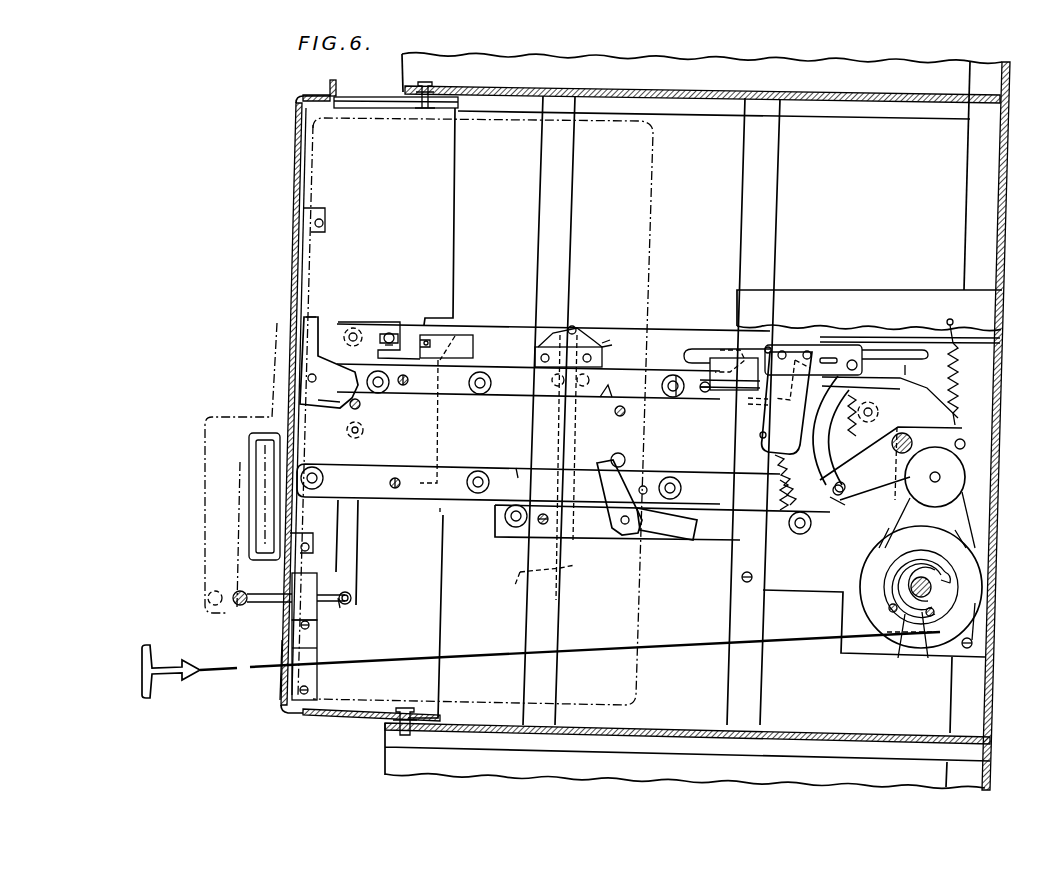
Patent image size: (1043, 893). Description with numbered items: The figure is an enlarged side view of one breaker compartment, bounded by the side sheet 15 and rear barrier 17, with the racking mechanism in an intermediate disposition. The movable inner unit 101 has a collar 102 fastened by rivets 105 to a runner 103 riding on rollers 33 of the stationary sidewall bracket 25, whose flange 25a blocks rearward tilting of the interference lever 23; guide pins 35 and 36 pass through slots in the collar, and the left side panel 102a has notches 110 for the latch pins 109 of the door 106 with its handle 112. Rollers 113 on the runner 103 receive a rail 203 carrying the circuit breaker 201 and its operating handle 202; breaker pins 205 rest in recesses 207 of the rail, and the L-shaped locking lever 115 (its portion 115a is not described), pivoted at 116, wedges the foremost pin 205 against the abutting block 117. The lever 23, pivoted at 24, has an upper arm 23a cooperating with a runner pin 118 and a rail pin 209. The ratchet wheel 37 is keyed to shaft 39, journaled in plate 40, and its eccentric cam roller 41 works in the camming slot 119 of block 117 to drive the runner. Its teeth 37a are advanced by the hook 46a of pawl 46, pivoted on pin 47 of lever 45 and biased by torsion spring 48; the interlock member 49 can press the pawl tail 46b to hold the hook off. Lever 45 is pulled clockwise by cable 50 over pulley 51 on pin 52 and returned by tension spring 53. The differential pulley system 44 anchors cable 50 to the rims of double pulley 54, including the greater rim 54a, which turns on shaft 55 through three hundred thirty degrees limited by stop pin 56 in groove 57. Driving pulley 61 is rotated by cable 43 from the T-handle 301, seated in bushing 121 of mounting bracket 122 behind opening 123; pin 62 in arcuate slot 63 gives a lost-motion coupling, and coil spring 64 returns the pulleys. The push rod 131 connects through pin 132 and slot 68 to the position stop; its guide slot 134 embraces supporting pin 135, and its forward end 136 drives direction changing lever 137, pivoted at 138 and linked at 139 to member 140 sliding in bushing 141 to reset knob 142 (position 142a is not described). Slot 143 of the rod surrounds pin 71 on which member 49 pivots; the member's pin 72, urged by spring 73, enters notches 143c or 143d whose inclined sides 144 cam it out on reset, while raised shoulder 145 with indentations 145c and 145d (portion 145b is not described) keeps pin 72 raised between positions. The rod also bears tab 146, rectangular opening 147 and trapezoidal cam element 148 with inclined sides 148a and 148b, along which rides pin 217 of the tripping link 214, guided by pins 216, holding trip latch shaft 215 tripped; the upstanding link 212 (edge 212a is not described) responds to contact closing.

The side sheet 15 is at (690, 68).
The rear barrier 17 is at (1005, 197).
The interference lever 23 is at (695, 525).
The upper arm 23a is at (608, 497).
The pivot 24 is at (620, 521).
The sidewall bracket 25 is at (730, 560).
The stationary flange 25a is at (598, 540).
The rollers 33 is at (505, 518).
The guide pin 35 is at (424, 110).
The guide pin 36 is at (405, 708).
The ratchet wheel 37 is at (963, 438).
The peripheral teeth 37a is at (933, 397).
The shaft 39 is at (912, 443).
The stationary plate 40 is at (900, 296).
The camming element 41 is at (890, 418).
The flexible cable 43 is at (655, 648).
The differential pulley system 44 is at (954, 526).
The lever 45 is at (905, 470).
The ratchet operating pawl 46 is at (812, 432).
The hook 46a is at (866, 505).
The tail 46b is at (846, 366).
The pin 47 is at (833, 492).
The torsion spring 48 is at (820, 472).
The interlock member 49 is at (765, 428).
The cable 50 is at (965, 488).
The pulley 51 is at (964, 475).
The pin 52 is at (937, 482).
The tension spring 53 is at (958, 368).
The double pulley 54 is at (960, 566).
The greater rim 54a is at (977, 603).
The shaft 55 is at (918, 576).
The stop pin 56 is at (936, 612).
The concentric groove 57 is at (955, 578).
The driving pulley 61 is at (870, 561).
The pin 62 is at (890, 611).
The arcuate slot 63 is at (880, 586).
The coil spring 64 is at (912, 622).
The horizontal slot 68 is at (908, 368).
The pin 71 is at (809, 351).
The pin 72 is at (783, 351).
The biasing spring 73 is at (776, 495).
The inner unit 101 is at (312, 738).
The collar 102 is at (345, 96).
The left side panel 102a is at (454, 190).
The runner 103 is at (538, 488).
The rivets 105 is at (408, 380).
The cover 106 is at (290, 266).
The pins 109 is at (325, 222).
The notches 110 is at (319, 210).
The door handle 112 is at (250, 440).
The rollers 113 is at (485, 392).
The locking lever 115 is at (336, 407).
The lever arm 115a is at (314, 316).
The pivot 116 is at (308, 378).
The abutting block 117 is at (835, 504).
The pin 118 is at (645, 485).
The camming slot 119 is at (866, 408).
The bushing 121 is at (308, 673).
The mounting bracket 122 is at (292, 635).
The opening 123 is at (278, 686).
The push rod 131 is at (665, 331).
The pin 132 is at (862, 357).
The guide slot 134 is at (388, 333).
The supporting pin 135 is at (389, 347).
The forward end 136 is at (353, 331).
The direction changing lever 137 is at (358, 548).
The pivot 138 is at (364, 432).
The link 139 is at (352, 598).
The rod-like member 140 is at (334, 606).
The bushing 141 is at (322, 592).
The reset knob 142 is at (242, 591).
The knob position 142a is at (208, 598).
The slot 143 is at (716, 347).
The notch 143c is at (736, 358).
The notch 143d is at (822, 348).
The forward side 144 is at (768, 346).
The raised shoulder 145 is at (752, 402).
The lever arm 145b is at (733, 383).
The indentation 145c is at (716, 392).
The indentation 145d is at (796, 380).
The tab 146 is at (426, 336).
The rectangular opening 147 is at (473, 348).
The cam element 148 is at (548, 367).
The front side 148a is at (547, 340).
The rear side 148b is at (598, 343).
The circuit breaker 201 is at (656, 180).
The operating handle 202 is at (208, 547).
The rail 203 is at (516, 468).
The pins 205 is at (361, 404).
The recesses 207 is at (318, 400).
The pin 209 is at (614, 456).
The upstanding link 212 is at (440, 414).
The plate edge 212a is at (462, 335).
The tripping link 214 is at (558, 438).
The trip latch shaft 215 is at (518, 572).
The pins 216 is at (590, 380).
The pin 217 is at (578, 330).
The T-handle 301 is at (145, 690).